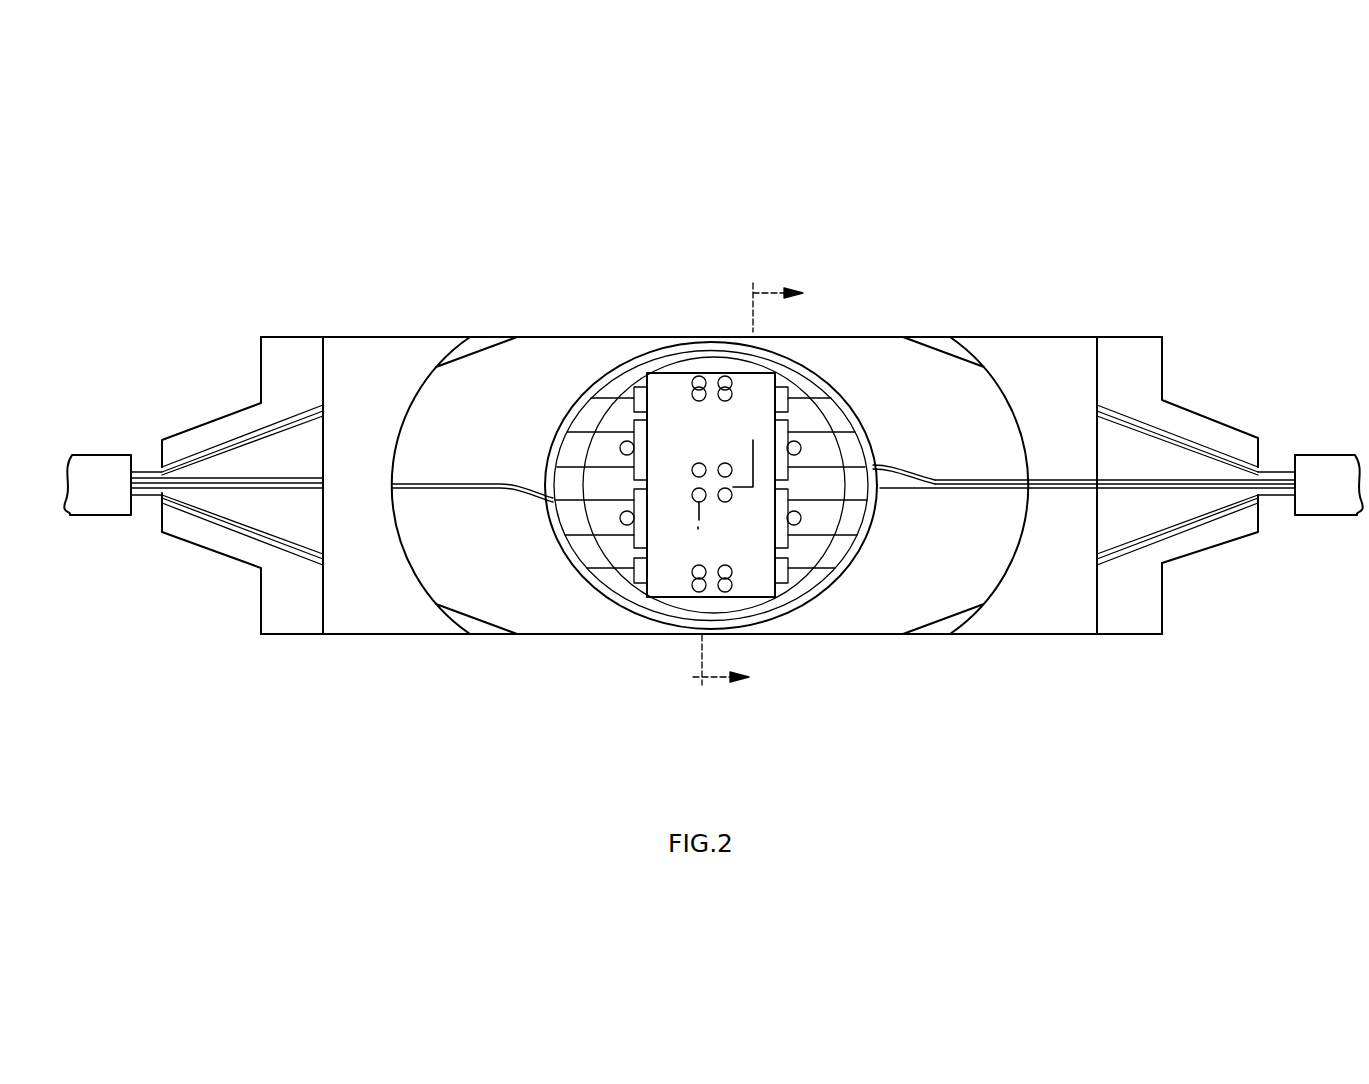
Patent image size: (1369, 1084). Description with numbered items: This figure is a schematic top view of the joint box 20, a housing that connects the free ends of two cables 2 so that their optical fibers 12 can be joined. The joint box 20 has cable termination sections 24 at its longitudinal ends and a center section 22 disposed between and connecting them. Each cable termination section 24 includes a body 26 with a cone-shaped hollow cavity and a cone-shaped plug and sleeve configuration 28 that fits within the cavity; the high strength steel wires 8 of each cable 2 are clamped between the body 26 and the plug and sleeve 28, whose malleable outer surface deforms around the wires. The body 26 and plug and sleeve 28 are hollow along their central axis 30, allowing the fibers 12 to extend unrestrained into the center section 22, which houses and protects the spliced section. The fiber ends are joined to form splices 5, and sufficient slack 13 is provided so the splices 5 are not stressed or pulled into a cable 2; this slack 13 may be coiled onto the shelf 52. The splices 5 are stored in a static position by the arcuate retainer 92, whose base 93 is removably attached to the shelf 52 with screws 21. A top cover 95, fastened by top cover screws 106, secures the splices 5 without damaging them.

The cable 2 is at (90, 507).
The splice 5 is at (645, 263).
The high strength steel wire 8 is at (150, 500).
The optical fiber 12 is at (150, 470).
The slack 13 is at (610, 372).
The joint box 20 is at (1123, 230).
The screw 21 is at (800, 522).
The center section 22 is at (488, 635).
The cable termination section 24 is at (275, 353).
The body 26 is at (263, 622).
The plug and sleeve configuration 28 is at (242, 457).
The central axis 30 is at (260, 477).
The shelf 52 is at (875, 358).
The arcuate retainer 92 is at (655, 628).
The base 93 is at (822, 442).
The top cover 95 is at (765, 597).
The top cover screw 106 is at (732, 373).